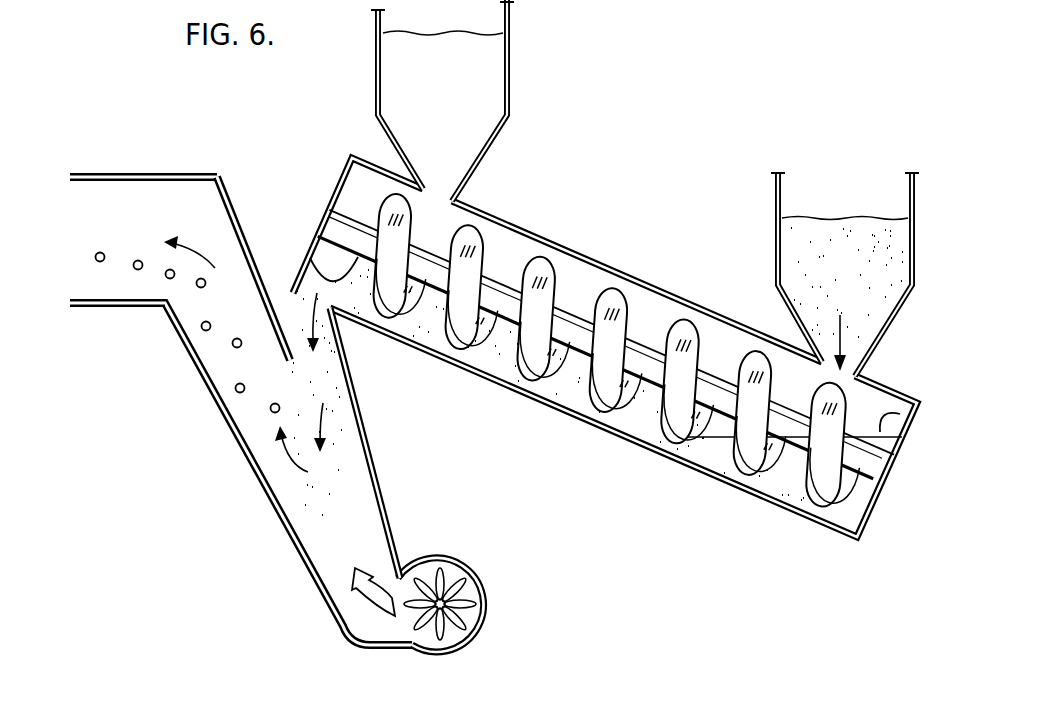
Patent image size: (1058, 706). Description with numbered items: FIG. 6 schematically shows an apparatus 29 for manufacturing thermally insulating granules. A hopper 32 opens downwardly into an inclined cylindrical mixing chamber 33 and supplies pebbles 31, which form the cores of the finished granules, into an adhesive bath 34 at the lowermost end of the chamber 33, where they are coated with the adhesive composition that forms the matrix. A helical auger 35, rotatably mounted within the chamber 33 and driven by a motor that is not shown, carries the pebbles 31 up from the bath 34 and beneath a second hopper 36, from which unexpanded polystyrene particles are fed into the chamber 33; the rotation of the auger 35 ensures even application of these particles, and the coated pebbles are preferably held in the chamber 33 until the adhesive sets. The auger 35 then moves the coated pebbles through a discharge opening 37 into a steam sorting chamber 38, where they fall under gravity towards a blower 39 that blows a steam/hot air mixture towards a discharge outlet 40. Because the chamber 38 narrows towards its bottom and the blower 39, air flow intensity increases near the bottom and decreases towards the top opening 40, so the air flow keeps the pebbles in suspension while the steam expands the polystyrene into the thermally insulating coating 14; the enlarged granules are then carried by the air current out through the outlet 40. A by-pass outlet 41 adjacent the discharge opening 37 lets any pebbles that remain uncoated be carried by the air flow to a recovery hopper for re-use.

The thermally insulating coating 14 is at (104, 255).
The apparatus 29 is at (675, 144).
The pebbles 31 is at (860, 267).
The hopper 32 is at (776, 199).
The inclined cylindrical mixing chamber 33 is at (597, 265).
The adhesive bath 34 is at (858, 488).
The helical auger 35 is at (524, 372).
The hopper 36 is at (458, 119).
The discharge opening 37 is at (338, 314).
The steam sorting chamber 38 is at (245, 462).
The blower 39 is at (480, 592).
The discharge outlet 40 is at (95, 212).
The by-pass outlet 41 is at (278, 240).